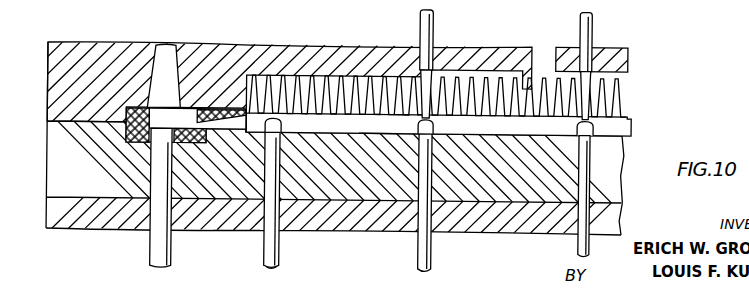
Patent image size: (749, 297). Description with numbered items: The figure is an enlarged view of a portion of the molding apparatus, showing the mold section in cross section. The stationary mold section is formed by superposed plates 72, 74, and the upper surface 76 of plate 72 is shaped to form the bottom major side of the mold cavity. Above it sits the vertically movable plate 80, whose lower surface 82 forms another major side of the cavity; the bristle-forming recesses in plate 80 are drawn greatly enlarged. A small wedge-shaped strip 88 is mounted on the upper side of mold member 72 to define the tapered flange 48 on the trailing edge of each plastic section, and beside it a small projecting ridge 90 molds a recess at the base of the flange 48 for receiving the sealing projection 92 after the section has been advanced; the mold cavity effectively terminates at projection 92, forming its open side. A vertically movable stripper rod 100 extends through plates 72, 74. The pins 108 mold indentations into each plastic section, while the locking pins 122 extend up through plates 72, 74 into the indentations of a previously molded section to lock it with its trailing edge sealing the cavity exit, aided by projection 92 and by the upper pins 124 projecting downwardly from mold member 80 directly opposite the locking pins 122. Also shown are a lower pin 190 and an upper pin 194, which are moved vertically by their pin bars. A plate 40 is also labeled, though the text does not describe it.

The vertically movable plate 80 is at (55, 84).
The plate 72 is at (55, 166).
The plate 74 is at (57, 218).
The stripper rod 100 is at (160, 249).
The tapered flange 48 is at (237, 229).
The pin 108 is at (268, 231).
The locking pin 122 is at (282, 267).
The support plate 40 is at (336, 120).
The upper surface 76 is at (379, 135).
The wedge-shaped strip 88 is at (220, 110).
The projecting ridge 90 is at (247, 110).
The lower surface 82 is at (330, 93).
The sealing projection 92 is at (401, 118).
The upper pin 124 is at (433, 24).
The upper pin 194 is at (592, 27).
The lower pin 190 is at (580, 252).